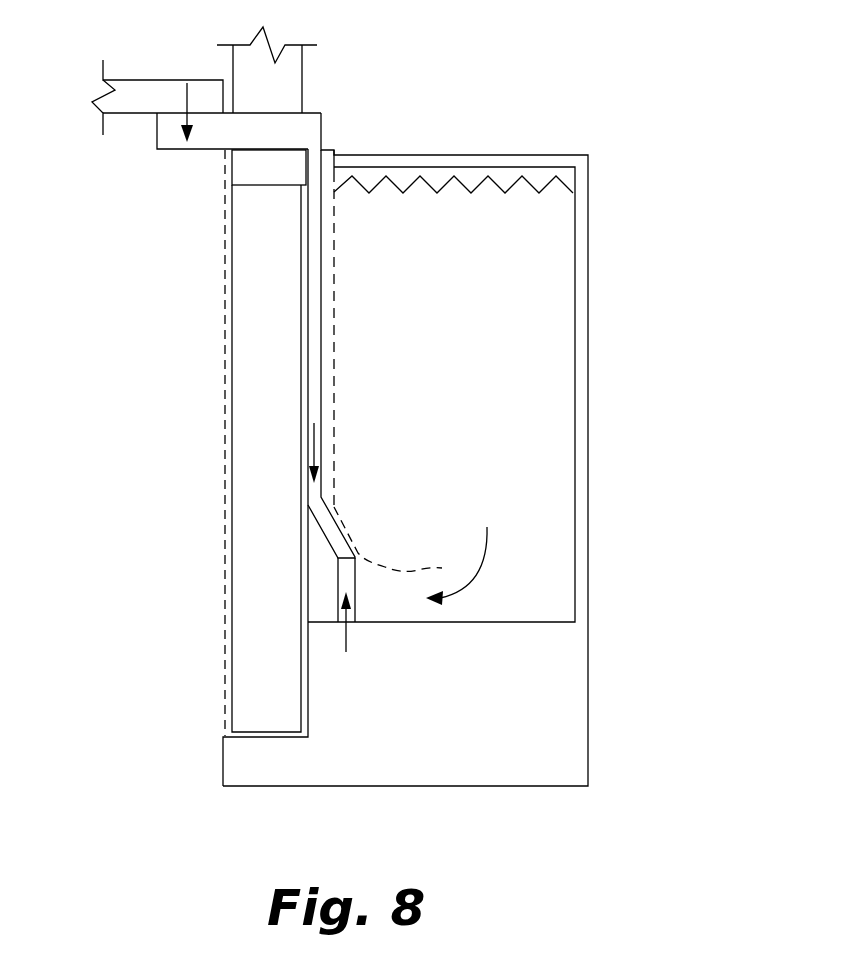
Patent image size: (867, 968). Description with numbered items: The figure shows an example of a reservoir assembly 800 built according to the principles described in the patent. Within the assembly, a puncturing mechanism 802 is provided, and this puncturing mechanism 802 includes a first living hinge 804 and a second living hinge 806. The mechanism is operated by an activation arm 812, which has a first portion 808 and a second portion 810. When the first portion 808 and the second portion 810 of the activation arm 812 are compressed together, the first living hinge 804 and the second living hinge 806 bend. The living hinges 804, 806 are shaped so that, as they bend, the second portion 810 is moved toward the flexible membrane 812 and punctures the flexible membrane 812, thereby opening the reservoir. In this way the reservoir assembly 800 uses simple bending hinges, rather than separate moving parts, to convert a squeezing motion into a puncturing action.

The reservoir assembly 800 is at (611, 138).
The puncturing mechanism 802 is at (439, 483).
The first living hinge 804 is at (312, 503).
The second living hinge 806 is at (352, 557).
The first portion 808 is at (357, 128).
The second portion 810 is at (375, 647).
The activation arm 812 is at (335, 306).